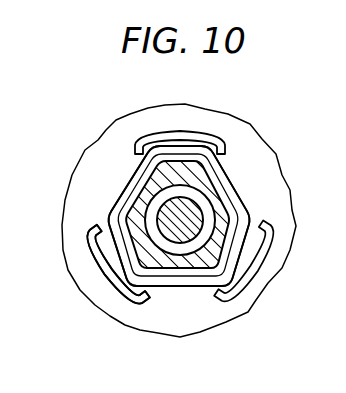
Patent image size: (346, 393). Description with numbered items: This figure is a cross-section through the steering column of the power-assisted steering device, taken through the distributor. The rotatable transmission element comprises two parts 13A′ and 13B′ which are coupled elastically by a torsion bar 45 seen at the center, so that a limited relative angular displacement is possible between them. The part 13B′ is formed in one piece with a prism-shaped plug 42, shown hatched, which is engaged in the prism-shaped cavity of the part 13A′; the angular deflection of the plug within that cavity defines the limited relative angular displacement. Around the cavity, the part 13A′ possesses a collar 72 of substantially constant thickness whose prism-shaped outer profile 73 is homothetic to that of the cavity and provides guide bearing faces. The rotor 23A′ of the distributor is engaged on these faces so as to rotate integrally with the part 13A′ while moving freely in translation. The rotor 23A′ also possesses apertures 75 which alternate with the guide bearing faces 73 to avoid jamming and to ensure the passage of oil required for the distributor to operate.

The rotor 23A′ is at (263, 141).
The prism-shaped outer profile 73 is at (228, 167).
The collar 72 is at (247, 210).
The prism-shaped plug 42 is at (218, 197).
The torsion bar 45 is at (191, 230).
The apertures 75 is at (192, 138).
The part of rotatable transmission element 13B′ is at (150, 172).
The part of rotatable transmission element 13A′ is at (148, 291).